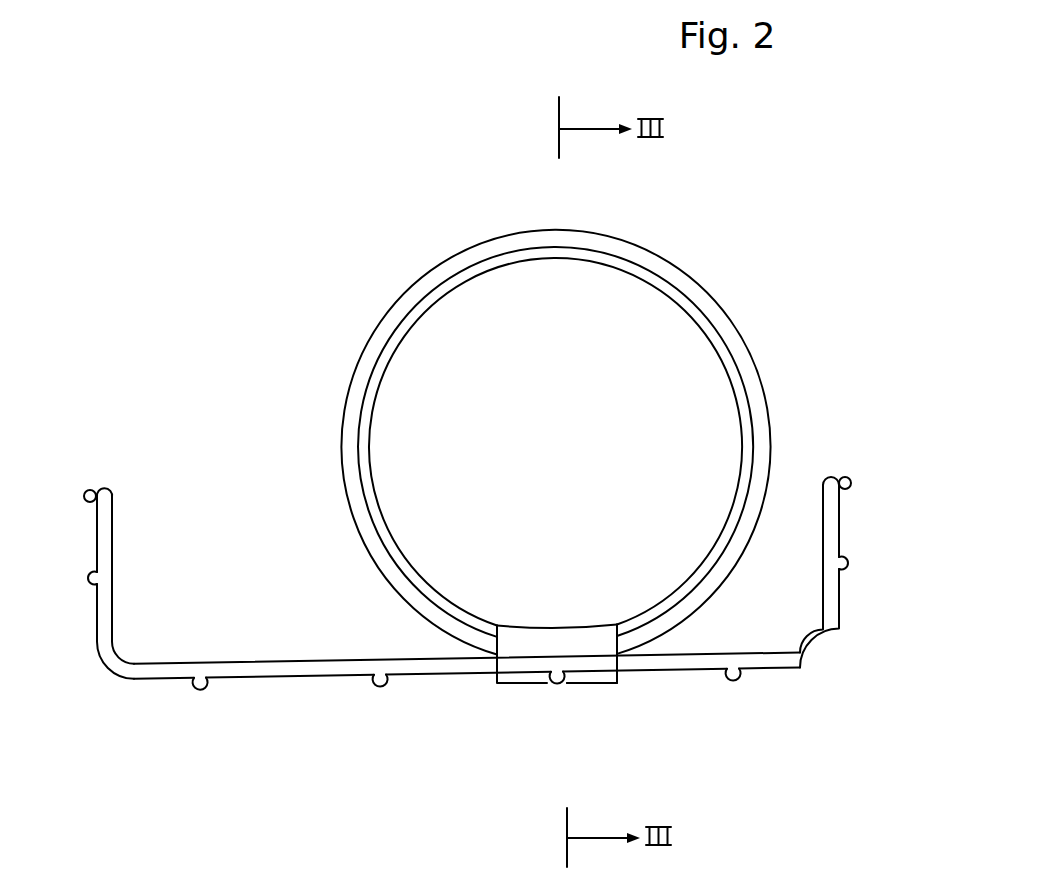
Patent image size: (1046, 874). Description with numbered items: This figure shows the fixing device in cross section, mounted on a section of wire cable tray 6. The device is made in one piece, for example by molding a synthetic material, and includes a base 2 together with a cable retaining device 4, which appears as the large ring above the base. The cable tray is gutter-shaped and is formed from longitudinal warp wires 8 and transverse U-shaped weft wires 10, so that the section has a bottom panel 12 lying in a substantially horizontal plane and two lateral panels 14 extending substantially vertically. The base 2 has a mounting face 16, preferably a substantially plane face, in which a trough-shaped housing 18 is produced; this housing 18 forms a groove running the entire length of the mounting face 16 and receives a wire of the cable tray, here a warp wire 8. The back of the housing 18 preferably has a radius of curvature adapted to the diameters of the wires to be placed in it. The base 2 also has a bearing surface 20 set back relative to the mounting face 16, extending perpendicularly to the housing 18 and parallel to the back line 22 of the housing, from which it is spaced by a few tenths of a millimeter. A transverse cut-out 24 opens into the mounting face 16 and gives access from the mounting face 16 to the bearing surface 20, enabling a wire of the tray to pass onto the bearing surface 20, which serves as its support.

The base 2 is at (558, 664).
The cable retaining device 4 is at (718, 318).
The section of wire cable tray 6 is at (464, 624).
The warp wires 8 is at (380, 689).
The weft wires 10 is at (327, 676).
The bottom panel 12 is at (245, 662).
The lateral panels 14 is at (99, 611).
The mounting face 16 is at (598, 692).
The housing 18 is at (557, 676).
The bearing surface 20 is at (496, 648).
The back line 22 is at (509, 664).
The transverse cut-out 24 is at (604, 657).